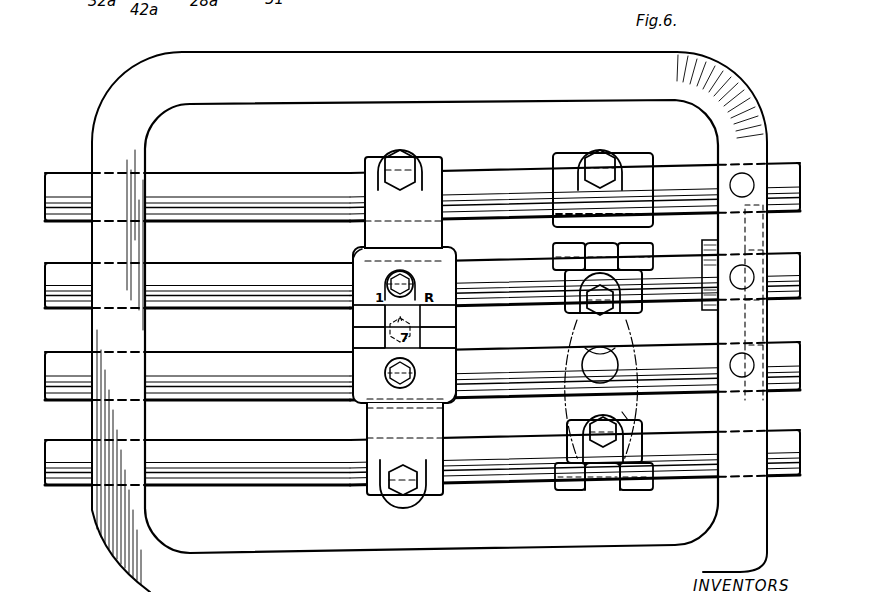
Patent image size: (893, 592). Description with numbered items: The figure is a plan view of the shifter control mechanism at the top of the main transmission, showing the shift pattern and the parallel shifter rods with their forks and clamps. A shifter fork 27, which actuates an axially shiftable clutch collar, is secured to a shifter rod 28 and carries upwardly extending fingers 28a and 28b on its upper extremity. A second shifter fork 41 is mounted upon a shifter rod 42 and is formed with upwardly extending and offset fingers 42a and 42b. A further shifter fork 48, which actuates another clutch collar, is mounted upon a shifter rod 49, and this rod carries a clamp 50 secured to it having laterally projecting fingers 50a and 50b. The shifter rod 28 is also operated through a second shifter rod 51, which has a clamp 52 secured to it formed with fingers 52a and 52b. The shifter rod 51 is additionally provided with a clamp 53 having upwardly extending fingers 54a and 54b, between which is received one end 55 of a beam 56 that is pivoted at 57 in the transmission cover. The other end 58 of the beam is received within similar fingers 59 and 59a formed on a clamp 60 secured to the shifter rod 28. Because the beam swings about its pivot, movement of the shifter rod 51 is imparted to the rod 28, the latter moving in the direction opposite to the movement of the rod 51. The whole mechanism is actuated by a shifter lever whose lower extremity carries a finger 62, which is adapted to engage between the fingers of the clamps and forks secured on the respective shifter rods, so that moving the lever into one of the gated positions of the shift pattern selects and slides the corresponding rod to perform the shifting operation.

The shifter fork 27 is at (443, 272).
The shifter rod 28 is at (205, 300).
The finger 28a is at (458, 320).
The finger 28b is at (352, 318).
The shifter fork 41 is at (458, 404).
The shifter rod 42 is at (263, 397).
The finger 42a is at (458, 341).
The finger 42b is at (352, 341).
The shifter fork 48 is at (568, 153).
The shifter rod 49 is at (293, 183).
The clamp 50 is at (430, 157).
The finger 50a is at (440, 292).
The finger 50b is at (352, 272).
The second shifter rod 51 is at (307, 481).
The clamp 52 is at (376, 496).
The finger 52a is at (458, 364).
The finger 52b is at (352, 366).
The clamp 53 is at (568, 430).
The finger 54a is at (578, 486).
The finger 54b is at (637, 487).
The end of beam 55 is at (612, 487).
The beam 56 is at (626, 416).
The pivot 57 is at (578, 352).
The other end of beam 58 is at (597, 254).
The finger 59 is at (645, 255).
The finger 59a is at (563, 252).
The clamp 60 is at (643, 312).
The finger 62 is at (386, 376).